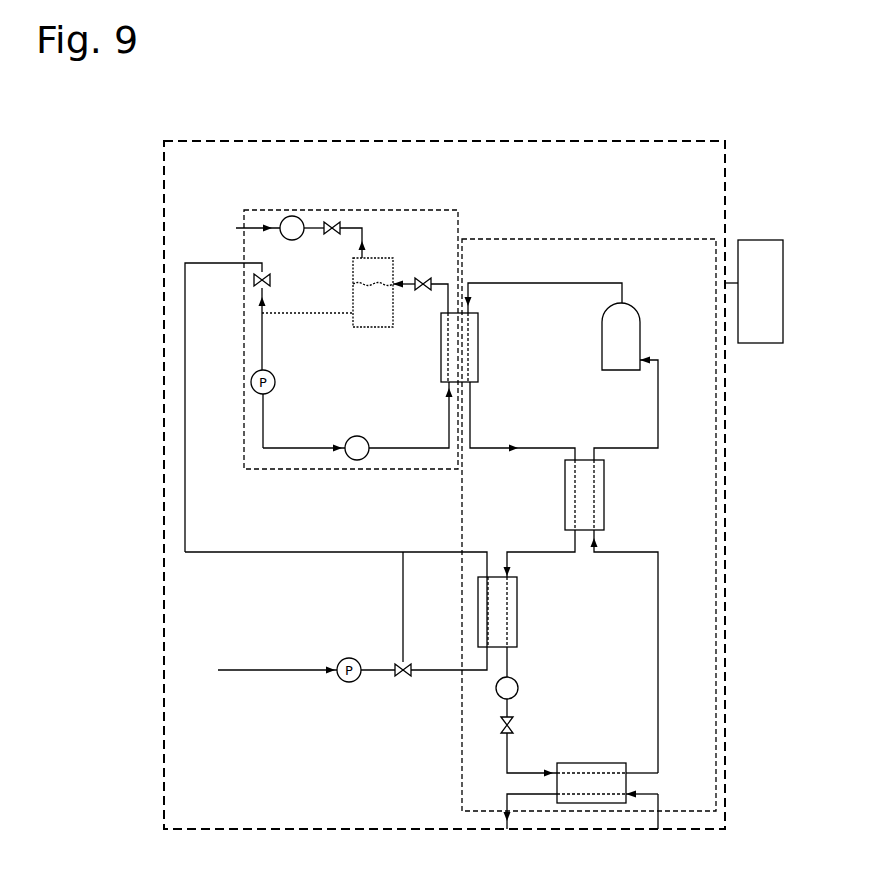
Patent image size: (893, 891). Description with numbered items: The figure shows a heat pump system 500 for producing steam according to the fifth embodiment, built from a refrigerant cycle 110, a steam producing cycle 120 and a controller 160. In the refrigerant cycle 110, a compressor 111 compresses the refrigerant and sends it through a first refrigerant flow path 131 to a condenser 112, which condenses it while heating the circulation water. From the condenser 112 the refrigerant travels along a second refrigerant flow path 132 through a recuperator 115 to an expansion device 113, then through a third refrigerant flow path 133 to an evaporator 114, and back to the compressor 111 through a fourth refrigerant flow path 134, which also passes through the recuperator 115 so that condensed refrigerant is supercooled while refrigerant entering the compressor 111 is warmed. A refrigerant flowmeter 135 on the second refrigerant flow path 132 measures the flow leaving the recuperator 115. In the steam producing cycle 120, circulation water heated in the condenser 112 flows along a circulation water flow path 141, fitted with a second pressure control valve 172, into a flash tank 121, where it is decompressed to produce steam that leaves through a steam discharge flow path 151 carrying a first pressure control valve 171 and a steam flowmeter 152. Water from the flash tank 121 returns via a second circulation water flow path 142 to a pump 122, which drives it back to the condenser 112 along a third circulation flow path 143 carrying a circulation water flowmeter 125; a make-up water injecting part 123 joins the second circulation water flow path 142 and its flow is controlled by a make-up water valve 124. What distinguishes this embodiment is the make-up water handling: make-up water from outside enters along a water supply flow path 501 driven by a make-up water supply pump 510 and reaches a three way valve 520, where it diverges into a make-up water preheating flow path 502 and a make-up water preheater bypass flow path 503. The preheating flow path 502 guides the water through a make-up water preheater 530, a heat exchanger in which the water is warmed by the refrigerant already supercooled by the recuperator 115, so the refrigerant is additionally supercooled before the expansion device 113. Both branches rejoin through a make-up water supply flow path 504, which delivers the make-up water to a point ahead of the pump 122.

The heat pump system for producing steam 500 is at (523, 118).
The refrigerant cycle 110 is at (647, 239).
The compressor 111 is at (632, 305).
The condenser 112 is at (482, 350).
The expansion device 113 is at (515, 730).
The evaporator 114 is at (600, 763).
The recuperator 115 is at (605, 496).
The steam producing cycle 120 is at (431, 210).
The flash tank 121 is at (384, 258).
The pump 122 is at (276, 381).
The make-up water injecting part 123 is at (265, 295).
The make-up water valve 124 is at (270, 284).
The circulation water flowmeter 125 is at (352, 461).
The first refrigerant flow path 131 is at (548, 283).
The second refrigerant flow path 132 is at (538, 450).
The third refrigerant flow path 133 is at (510, 755).
The fourth refrigerant flow path 134 is at (640, 448).
The refrigerant flowmeter 135 is at (519, 689).
The circulation water flow path 141 is at (426, 280).
The second circulation water flow path 142 is at (298, 318).
The third circulation flow path 143 is at (303, 448).
The steam discharge flow path 151 is at (344, 221).
The steam flowmeter 152 is at (291, 215).
The controller 160 is at (752, 240).
The first pressure control valve 171 is at (330, 220).
The second pressure control valve 172 is at (425, 292).
The water supply flow path 501 is at (278, 672).
The make-up water preheating flow path 502 is at (451, 552).
The make-up water preheater bypass flow path 503 is at (403, 609).
The make-up water supply flow path 504 is at (213, 263).
The make-up water supply pump 510 is at (349, 683).
The three way valve 520 is at (405, 680).
The make-up water preheater 530 is at (520, 612).